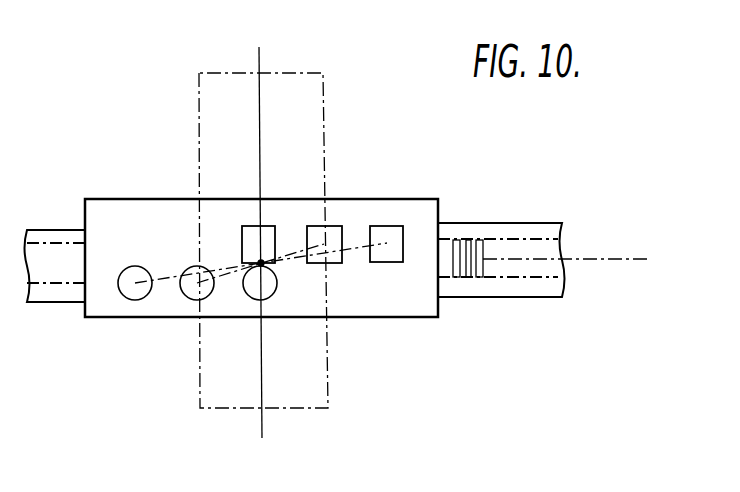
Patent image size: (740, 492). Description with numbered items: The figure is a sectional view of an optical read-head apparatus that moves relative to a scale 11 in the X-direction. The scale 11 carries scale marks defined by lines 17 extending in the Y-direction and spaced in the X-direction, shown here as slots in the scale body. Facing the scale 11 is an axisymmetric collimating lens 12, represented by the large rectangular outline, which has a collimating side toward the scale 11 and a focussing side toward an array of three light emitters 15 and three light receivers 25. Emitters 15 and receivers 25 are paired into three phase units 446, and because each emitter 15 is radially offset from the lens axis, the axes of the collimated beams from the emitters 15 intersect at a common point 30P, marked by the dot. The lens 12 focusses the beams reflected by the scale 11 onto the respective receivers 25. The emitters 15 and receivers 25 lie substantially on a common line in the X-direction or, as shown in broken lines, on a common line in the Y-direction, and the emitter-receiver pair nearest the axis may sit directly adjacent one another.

The scale 11 is at (532, 297).
The collimating lens 12 is at (142, 198).
The light emitters 15 is at (250, 297).
The lines 17 is at (491, 262).
The light receivers 25 is at (403, 227).
The phase units 446 is at (375, 259).
The common point 30P is at (259, 262).